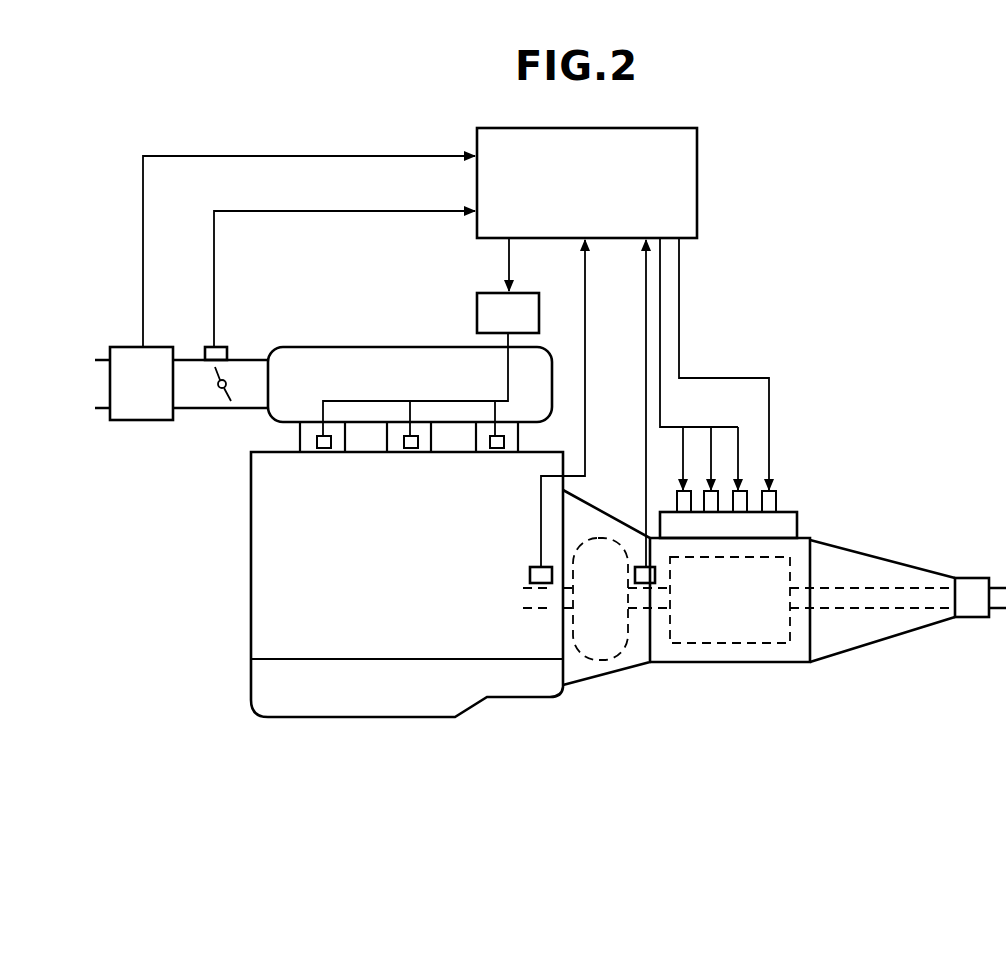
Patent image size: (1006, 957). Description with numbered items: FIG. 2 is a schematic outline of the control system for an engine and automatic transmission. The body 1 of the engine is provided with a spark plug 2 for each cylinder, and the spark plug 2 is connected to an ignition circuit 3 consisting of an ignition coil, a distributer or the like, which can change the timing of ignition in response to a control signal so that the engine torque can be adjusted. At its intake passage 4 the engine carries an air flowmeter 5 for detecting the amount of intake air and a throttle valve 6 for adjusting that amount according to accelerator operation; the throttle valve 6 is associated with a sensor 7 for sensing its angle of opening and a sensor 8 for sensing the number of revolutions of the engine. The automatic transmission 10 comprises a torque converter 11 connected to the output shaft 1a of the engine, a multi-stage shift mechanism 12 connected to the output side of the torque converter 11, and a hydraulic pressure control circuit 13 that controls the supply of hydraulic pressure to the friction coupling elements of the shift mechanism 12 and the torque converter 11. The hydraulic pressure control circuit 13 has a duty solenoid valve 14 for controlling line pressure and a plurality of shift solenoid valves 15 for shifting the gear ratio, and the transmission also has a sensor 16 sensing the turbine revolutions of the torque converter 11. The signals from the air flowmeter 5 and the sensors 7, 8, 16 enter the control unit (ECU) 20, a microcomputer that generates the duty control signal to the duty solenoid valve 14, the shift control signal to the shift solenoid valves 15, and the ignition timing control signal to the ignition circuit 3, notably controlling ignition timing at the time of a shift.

The engine body 1 is at (248, 581).
The output shaft 1a is at (530, 612).
The spark plug 2 is at (411, 450).
The ignition circuit 3 is at (475, 320).
The intake passage 4 is at (253, 358).
The air flowmeter 5 is at (157, 421).
The throttle valve 6 is at (219, 392).
The sensor 7 is at (218, 347).
The sensor 8 is at (530, 567).
The automatic transmission 10 is at (815, 535).
The torque converter 11 is at (595, 661).
The multi-stage shift mechanism 12 is at (720, 645).
The hydraulic pressure control circuit 13 is at (790, 512).
The duty solenoid valve 14 is at (772, 491).
The shift solenoid valves 15 is at (680, 491).
The sensor 16 is at (656, 578).
The control unit (ECU) 20 is at (698, 150).